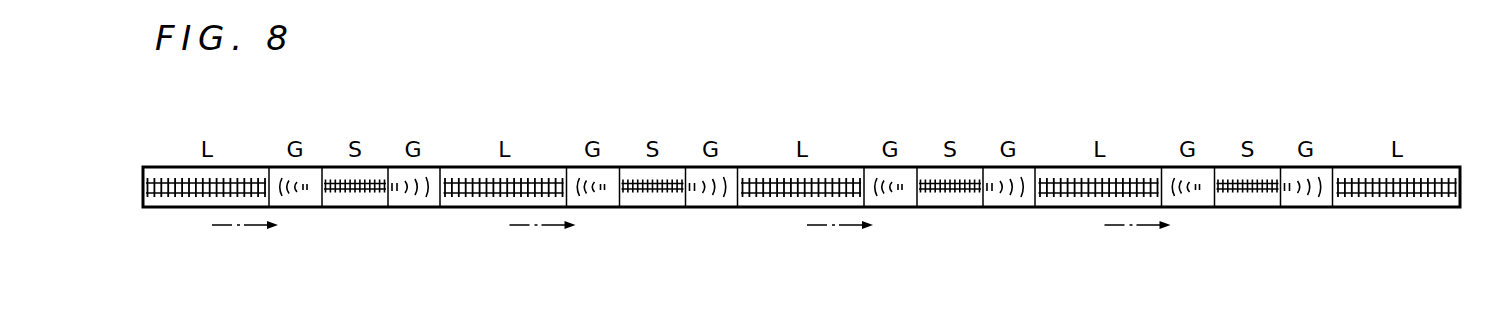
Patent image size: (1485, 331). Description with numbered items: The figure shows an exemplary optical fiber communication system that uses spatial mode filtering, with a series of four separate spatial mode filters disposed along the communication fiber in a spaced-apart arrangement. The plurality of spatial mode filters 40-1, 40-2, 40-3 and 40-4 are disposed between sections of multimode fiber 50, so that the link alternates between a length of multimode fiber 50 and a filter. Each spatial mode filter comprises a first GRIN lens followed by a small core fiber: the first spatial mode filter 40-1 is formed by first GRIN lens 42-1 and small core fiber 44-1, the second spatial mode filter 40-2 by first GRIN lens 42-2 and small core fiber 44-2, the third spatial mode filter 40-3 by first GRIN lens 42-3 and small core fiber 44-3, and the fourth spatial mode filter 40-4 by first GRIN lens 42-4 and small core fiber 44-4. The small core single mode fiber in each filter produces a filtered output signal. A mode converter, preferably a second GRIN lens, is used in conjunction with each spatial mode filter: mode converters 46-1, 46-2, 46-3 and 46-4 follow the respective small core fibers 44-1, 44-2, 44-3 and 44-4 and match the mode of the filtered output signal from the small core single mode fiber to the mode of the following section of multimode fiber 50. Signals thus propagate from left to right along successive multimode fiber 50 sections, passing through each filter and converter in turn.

The spatial mode filter 40-1 is at (330, 176).
The spatial mode filter 40-2 is at (628, 176).
The spatial mode filter 40-3 is at (925, 176).
The spatial mode filter 40-4 is at (1223, 176).
The first GRIN lens 42-1 is at (298, 220).
The first GRIN lens 42-2 is at (595, 220).
The first GRIN lens 42-3 is at (893, 220).
The first GRIN lens 42-4 is at (1190, 220).
The small core fiber 44-1 is at (355, 221).
The small core fiber 44-2 is at (653, 221).
The small core fiber 44-3 is at (950, 221).
The small core fiber 44-4 is at (1248, 221).
The mode converter 46-1 is at (423, 143).
The mode converter 46-2 is at (721, 143).
The mode converter 46-3 is at (1018, 143).
The mode converter 46-4 is at (1316, 143).
The multimode fiber 50 is at (801, 220).